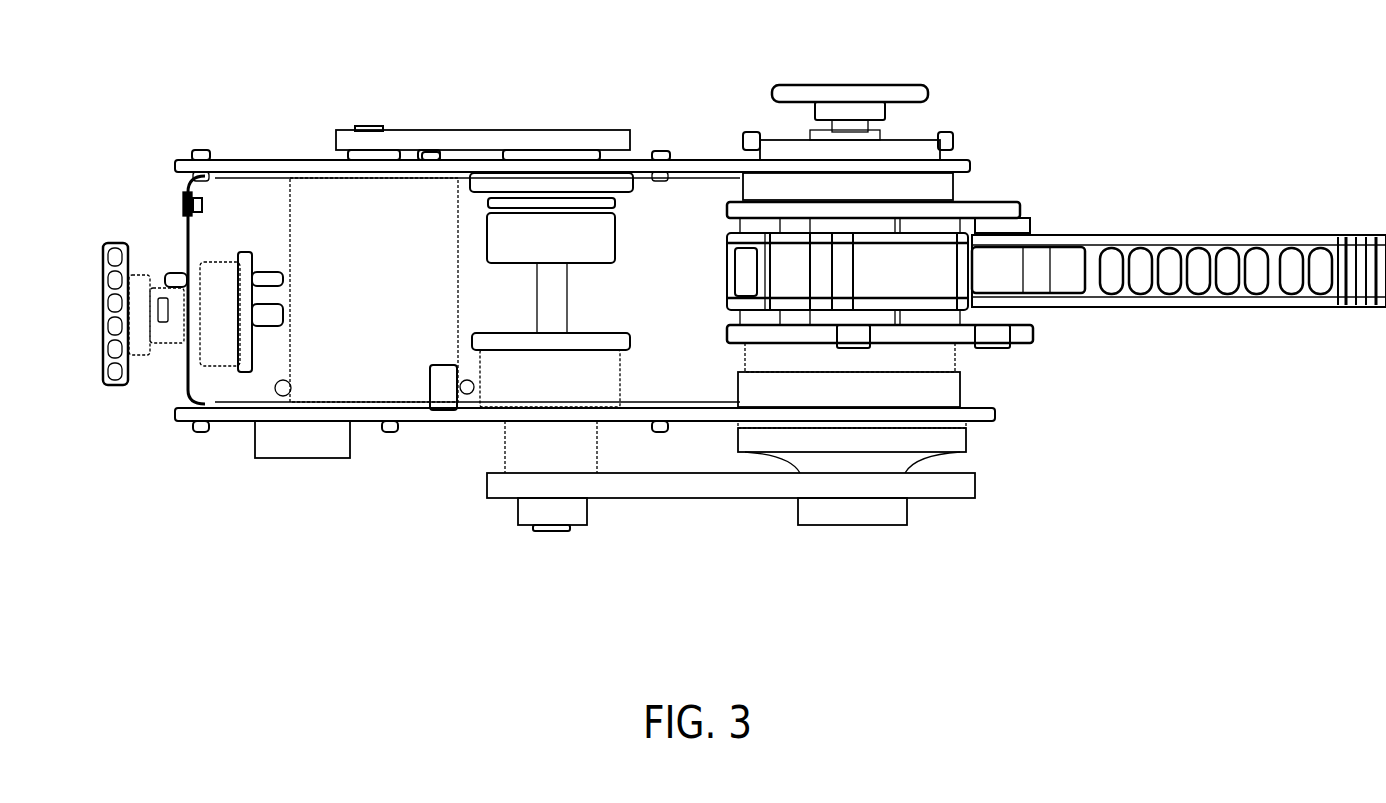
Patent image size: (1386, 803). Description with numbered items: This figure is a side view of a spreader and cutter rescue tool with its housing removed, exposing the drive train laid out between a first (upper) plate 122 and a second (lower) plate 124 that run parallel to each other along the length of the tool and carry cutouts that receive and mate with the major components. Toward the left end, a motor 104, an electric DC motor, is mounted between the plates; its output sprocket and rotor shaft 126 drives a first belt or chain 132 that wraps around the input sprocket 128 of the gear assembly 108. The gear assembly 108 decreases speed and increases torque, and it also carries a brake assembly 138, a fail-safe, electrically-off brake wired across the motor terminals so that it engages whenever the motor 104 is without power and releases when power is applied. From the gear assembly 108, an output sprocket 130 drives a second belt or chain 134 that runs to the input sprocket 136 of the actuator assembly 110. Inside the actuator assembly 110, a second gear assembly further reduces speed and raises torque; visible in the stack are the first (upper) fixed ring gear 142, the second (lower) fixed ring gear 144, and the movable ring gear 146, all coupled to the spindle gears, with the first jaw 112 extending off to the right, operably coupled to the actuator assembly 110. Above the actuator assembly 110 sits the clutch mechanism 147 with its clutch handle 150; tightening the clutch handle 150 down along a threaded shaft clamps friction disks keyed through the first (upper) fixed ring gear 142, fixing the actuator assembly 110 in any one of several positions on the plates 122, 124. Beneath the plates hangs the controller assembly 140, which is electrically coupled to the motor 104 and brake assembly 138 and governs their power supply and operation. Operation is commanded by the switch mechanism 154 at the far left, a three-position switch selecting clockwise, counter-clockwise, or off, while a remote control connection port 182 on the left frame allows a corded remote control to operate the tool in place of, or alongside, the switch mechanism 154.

The motor 104 is at (312, 195).
The gear assembly 108 is at (596, 110).
The actuator assembly 110 is at (1038, 346).
The first jaw 112 is at (1242, 298).
The first (upper) plate 122 is at (708, 165).
The second (lower) plate 124 is at (425, 415).
The output sprocket and rotor shaft 126 is at (380, 128).
The input sprocket 128 is at (550, 130).
The output sprocket 130 is at (577, 510).
The first belt or chain 132 is at (470, 135).
The second belt or chain 134 is at (733, 490).
The input sprocket of the actuator assembly 136 is at (893, 525).
The brake assembly 138 is at (612, 258).
The controller assembly 140 is at (297, 447).
The first (upper) fixed ring gear 142 is at (948, 176).
The second (lower) fixed ring gear 144 is at (948, 352).
The movable ring gear 146 is at (1030, 225).
The clutch mechanism 147 is at (935, 110).
The clutch handle 150 is at (815, 85).
The switch mechanism 154 is at (105, 258).
The remote control connection port 182 is at (186, 205).